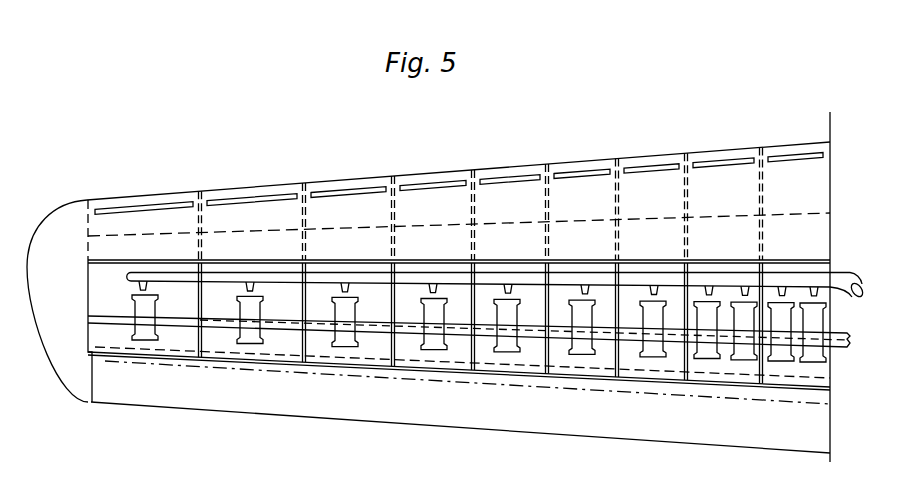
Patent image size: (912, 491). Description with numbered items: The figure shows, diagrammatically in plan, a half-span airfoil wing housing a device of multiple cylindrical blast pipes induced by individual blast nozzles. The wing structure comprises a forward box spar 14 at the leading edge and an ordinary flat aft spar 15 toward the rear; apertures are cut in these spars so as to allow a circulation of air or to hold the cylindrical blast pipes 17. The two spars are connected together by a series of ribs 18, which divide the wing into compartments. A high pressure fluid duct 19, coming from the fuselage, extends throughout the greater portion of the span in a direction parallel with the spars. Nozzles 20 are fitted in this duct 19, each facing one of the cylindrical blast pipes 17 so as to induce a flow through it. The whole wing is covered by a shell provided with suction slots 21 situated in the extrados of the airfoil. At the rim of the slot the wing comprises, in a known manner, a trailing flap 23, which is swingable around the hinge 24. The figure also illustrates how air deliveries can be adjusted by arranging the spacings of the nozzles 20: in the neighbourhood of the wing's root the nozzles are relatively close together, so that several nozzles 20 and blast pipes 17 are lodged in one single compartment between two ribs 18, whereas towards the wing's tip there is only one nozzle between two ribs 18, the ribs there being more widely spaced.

The forward box spar 14 is at (813, 233).
The flat aft spar 15 is at (848, 341).
The cylindrical blast pipe 17 is at (514, 350).
The rib 18 is at (300, 184).
The high pressure fluid duct 19 is at (855, 278).
The nozzle 20 is at (508, 292).
The suction slot 21 is at (507, 184).
The trailing flap 23 is at (830, 427).
The hinge 24 is at (620, 389).